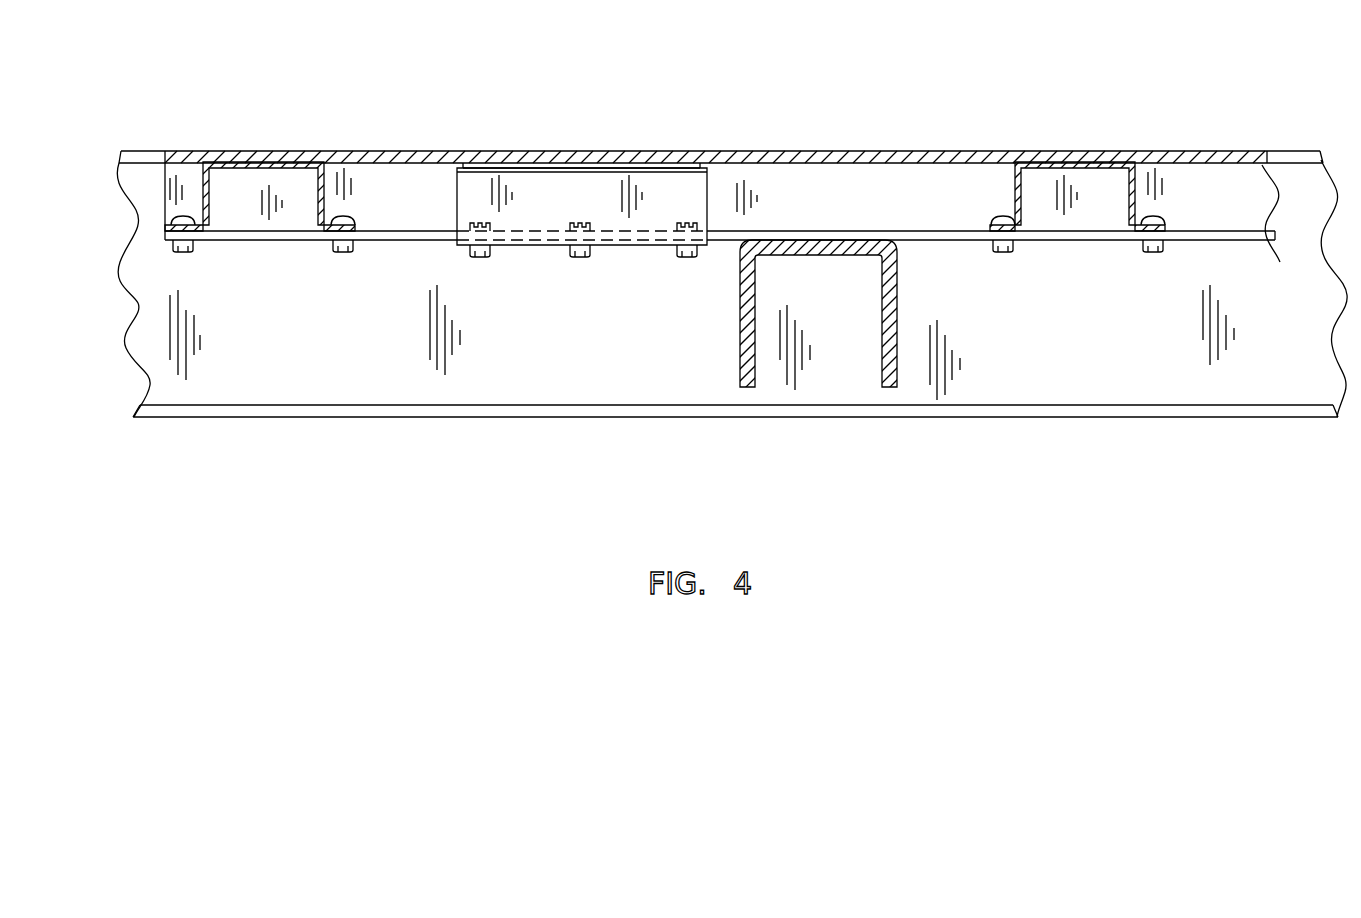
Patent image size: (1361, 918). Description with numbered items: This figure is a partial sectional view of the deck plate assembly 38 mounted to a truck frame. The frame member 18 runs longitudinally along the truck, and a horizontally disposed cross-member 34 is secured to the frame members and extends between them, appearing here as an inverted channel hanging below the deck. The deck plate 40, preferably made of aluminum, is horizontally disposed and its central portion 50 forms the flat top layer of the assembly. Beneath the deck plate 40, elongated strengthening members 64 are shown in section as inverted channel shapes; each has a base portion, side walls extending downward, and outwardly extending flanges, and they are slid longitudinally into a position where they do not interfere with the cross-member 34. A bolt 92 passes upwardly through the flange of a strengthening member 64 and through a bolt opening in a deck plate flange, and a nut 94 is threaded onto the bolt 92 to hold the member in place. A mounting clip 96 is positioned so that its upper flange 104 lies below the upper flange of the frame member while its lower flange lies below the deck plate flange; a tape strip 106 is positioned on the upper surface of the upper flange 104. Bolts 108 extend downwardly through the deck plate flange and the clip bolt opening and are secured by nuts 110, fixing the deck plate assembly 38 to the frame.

The frame member 18 is at (503, 368).
The cross-member 34 is at (897, 348).
The deck plate assembly 38 is at (942, 193).
The deck plate 40 is at (768, 148).
The central portion 50 is at (380, 151).
The strengthening member 64 is at (214, 186).
The bolt 92 is at (1153, 252).
The nut 94 is at (1003, 252).
The mounting clip 96 is at (662, 190).
The upper flange 104 is at (536, 178).
The tape strip 106 is at (578, 168).
The bolt 108 is at (580, 257).
The nut 110 is at (687, 257).